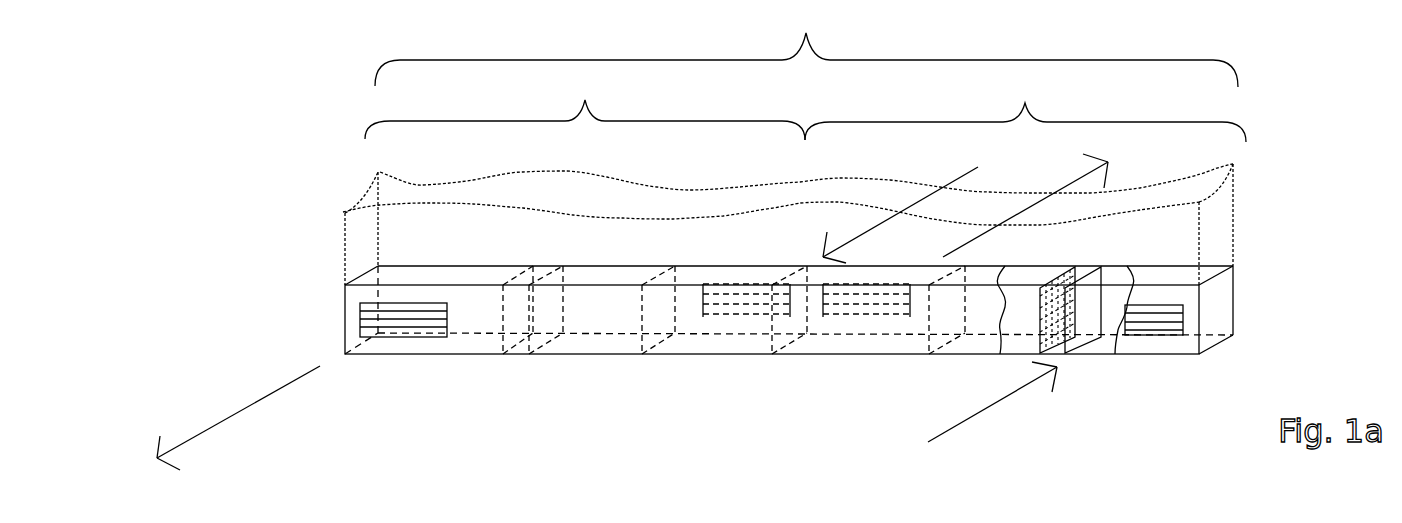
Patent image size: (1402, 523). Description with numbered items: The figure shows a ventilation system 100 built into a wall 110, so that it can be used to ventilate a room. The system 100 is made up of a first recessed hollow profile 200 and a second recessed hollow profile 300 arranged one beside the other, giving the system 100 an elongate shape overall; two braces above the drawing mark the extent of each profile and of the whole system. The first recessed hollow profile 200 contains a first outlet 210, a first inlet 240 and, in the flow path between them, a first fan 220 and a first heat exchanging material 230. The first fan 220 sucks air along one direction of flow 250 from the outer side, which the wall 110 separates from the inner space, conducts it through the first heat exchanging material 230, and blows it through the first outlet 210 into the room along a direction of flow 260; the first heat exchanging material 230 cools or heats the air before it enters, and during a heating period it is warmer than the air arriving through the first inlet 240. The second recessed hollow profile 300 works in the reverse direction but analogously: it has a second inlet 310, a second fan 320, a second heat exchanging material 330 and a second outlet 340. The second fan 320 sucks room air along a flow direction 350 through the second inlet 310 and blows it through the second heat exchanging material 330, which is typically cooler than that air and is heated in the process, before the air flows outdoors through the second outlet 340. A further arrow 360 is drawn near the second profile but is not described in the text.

The system 100 is at (806, 45).
The wall 110 is at (366, 233).
The first recessed hollow profile 200 is at (585, 106).
The second recessed hollow profile 300 is at (1025, 108).
The first outlet 210 is at (408, 322).
The first fan 220 is at (520, 323).
The first heat exchanging material 230 is at (613, 323).
The first inlet 240 is at (735, 308).
The second outlet 340 is at (838, 308).
The direction of flow 250 is at (917, 199).
The second direction 360 is at (1051, 196).
The direction of flow 260 is at (238, 418).
The flow direction 350 is at (967, 416).
The second heat exchanging material 330 is at (1057, 337).
The second fan 320 is at (1092, 323).
The second inlet 310 is at (1179, 335).